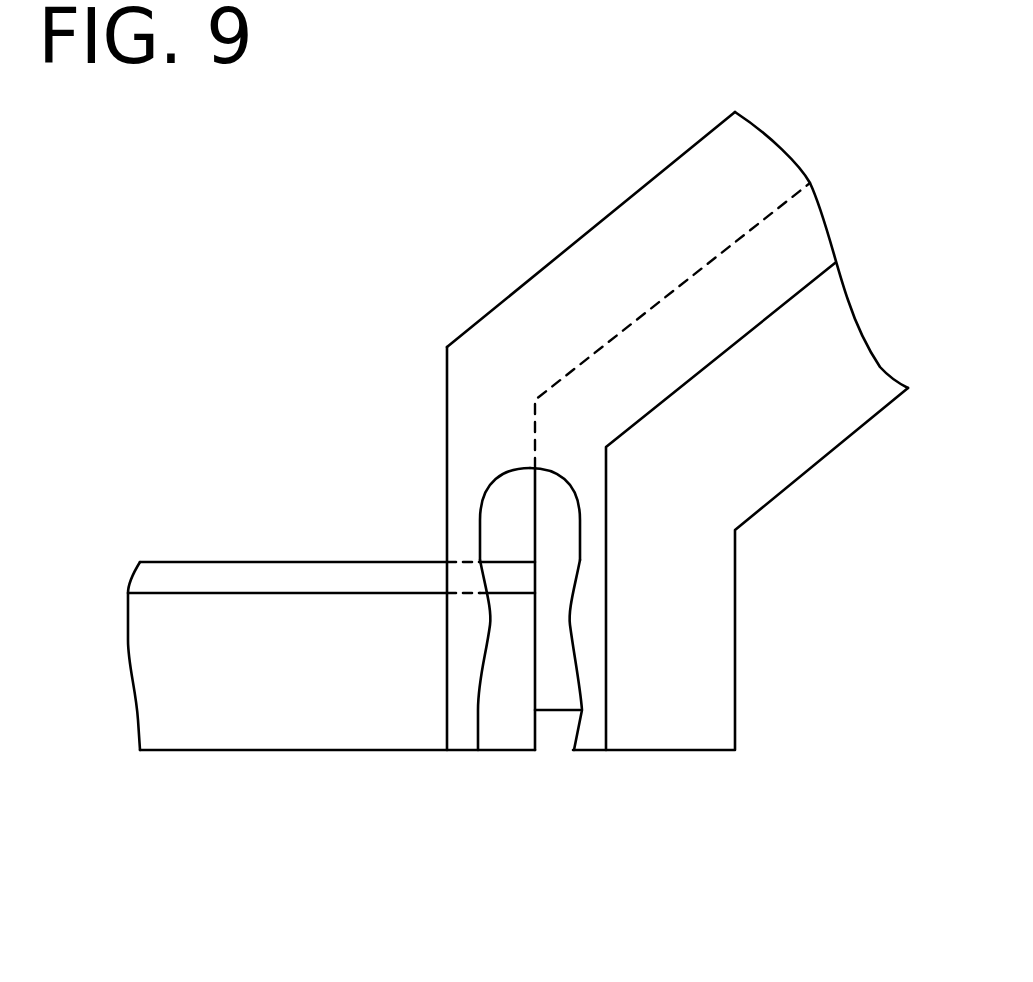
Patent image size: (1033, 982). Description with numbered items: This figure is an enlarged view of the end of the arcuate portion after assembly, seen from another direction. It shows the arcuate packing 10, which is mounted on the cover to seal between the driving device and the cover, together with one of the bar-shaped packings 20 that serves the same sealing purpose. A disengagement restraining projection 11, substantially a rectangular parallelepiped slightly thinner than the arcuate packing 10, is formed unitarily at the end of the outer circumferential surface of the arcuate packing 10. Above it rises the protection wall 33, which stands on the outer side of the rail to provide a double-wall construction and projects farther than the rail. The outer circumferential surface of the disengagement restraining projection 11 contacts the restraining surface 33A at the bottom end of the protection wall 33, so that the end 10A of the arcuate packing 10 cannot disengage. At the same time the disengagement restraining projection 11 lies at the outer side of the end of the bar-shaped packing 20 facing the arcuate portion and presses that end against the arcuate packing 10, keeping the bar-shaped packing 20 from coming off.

The arcuate packing 10 is at (187, 712).
The end of the arcuate packing 10A is at (428, 530).
The protection wall 33 is at (531, 307).
The restraining surface 33A is at (462, 683).
The disengagement restraining projection 11 is at (513, 723).
The bar-shaped packing 20 is at (555, 687).